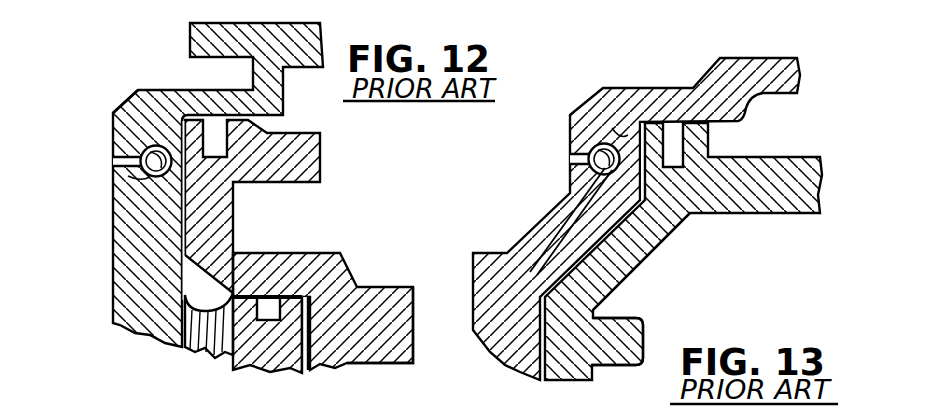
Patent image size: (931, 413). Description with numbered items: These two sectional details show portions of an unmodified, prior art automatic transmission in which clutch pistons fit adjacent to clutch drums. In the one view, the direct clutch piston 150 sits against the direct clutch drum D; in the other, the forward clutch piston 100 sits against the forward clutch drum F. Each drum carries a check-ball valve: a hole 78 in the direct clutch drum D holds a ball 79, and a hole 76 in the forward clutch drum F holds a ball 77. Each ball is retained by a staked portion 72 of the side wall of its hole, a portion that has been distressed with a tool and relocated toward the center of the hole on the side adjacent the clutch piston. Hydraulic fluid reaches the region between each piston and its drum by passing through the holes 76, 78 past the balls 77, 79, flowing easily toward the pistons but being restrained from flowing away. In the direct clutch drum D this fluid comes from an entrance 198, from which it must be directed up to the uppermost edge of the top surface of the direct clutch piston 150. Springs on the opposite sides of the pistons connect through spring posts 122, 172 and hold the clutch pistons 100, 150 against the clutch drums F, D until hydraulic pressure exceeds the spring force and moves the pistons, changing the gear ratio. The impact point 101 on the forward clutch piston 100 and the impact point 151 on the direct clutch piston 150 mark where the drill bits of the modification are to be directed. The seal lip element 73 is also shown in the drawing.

In FIG. 12, the direct clutch drum D is at (113, 97).
In FIG. 12, the staked portion 72 is at (180, 150).
In FIG. 13, the staked portion 72 is at (638, 130).
In FIG. 12, the seal lip 73 is at (128, 176).
In FIG. 13, the seal lip 73 is at (570, 196).
In FIG. 13, the hole 76 is at (590, 159).
In FIG. 13, the ball 77 is at (617, 133).
In FIG. 12, the hole 78 is at (143, 162).
In FIG. 12, the ball 79 is at (113, 118).
In FIG. 13, the forward clutch piston 100 is at (690, 213).
In FIG. 13, the impact point 101 is at (650, 250).
In FIG. 13, the spring post 122 is at (650, 340).
In FIG. 12, the direct clutch piston 150 is at (364, 272).
In FIG. 12, the impact point 151 is at (232, 208).
In FIG. 12, the bottom surface spring post 172 is at (413, 340).
In FIG. 12, the entrance 198 is at (208, 338).
In FIG. 13, the forward clutch drum F is at (707, 64).